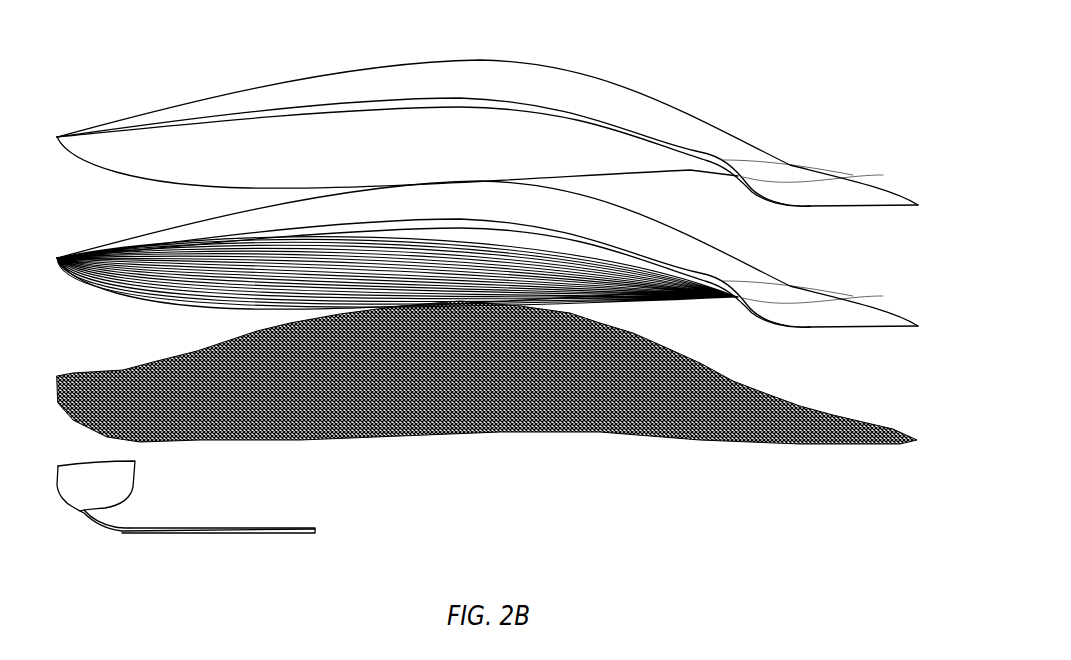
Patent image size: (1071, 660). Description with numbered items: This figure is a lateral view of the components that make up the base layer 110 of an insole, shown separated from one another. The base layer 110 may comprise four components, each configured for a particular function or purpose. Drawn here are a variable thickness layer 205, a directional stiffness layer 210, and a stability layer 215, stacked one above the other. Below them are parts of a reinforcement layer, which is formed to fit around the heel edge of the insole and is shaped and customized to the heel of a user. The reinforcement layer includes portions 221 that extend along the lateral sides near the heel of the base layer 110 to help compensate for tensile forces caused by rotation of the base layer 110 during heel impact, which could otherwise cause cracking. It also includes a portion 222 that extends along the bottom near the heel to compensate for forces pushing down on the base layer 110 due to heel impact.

The base layer 110 is at (162, 72).
The variable thickness layer 205 is at (890, 194).
The directional stiffness layer 210 is at (893, 308).
The stability layer 215 is at (893, 423).
The portions 221 is at (120, 487).
The portion 222 is at (315, 531).